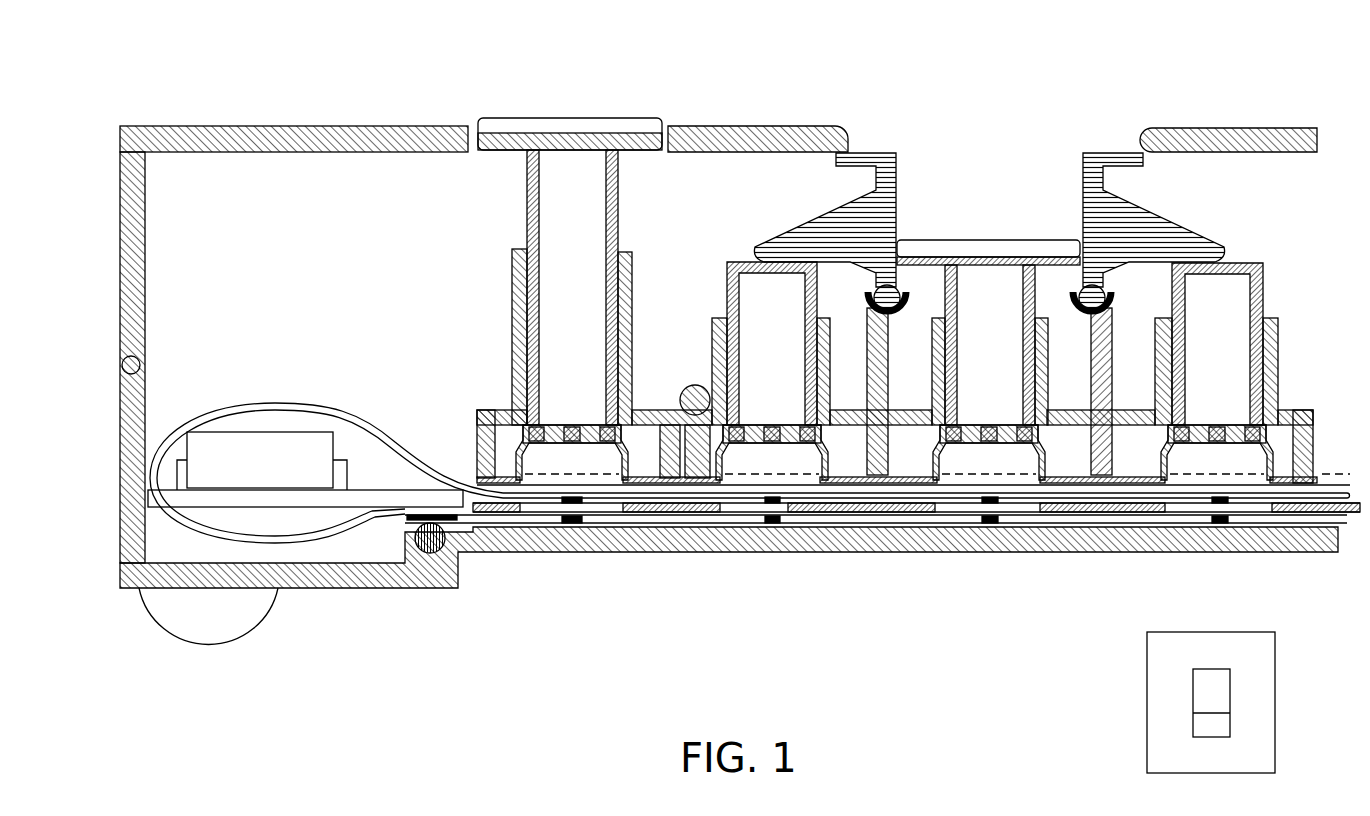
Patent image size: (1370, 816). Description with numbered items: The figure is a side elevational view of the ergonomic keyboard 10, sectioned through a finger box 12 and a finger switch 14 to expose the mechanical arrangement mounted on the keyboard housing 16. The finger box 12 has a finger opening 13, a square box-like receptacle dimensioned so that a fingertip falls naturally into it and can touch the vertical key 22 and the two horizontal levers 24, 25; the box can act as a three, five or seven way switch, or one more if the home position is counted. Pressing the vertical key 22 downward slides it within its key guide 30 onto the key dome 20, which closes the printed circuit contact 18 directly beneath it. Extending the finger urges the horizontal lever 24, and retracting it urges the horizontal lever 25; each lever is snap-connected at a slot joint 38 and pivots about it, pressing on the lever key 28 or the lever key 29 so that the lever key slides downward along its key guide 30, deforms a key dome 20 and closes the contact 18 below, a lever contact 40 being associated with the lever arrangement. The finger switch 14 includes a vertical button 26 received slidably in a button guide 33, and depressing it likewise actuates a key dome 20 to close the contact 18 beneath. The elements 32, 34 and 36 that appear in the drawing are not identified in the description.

The ergonomic keyboard 10 is at (162, 86).
The finger box 12 is at (1158, 48).
The finger opening 13 is at (942, 214).
The finger switch 14 is at (343, 72).
The keyboard housing 16 is at (500, 563).
The printed circuit contact 18 is at (839, 560).
The key dome 20 is at (730, 432).
The vertical key 22 is at (1000, 238).
The horizontal lever 24 is at (898, 186).
The horizontal lever 25 is at (1105, 180).
The vertical button 26 is at (527, 116).
The lever key 28 is at (1244, 260).
The lever key 29 is at (722, 282).
The key guide 30 is at (1050, 342).
The cover 32 is at (238, 124).
The button guide 33 is at (510, 320).
The memory module 34 is at (268, 430).
The cylindrical portion 36 is at (197, 645).
The slot joint 38 is at (900, 322).
The lever contact 40 is at (752, 258).